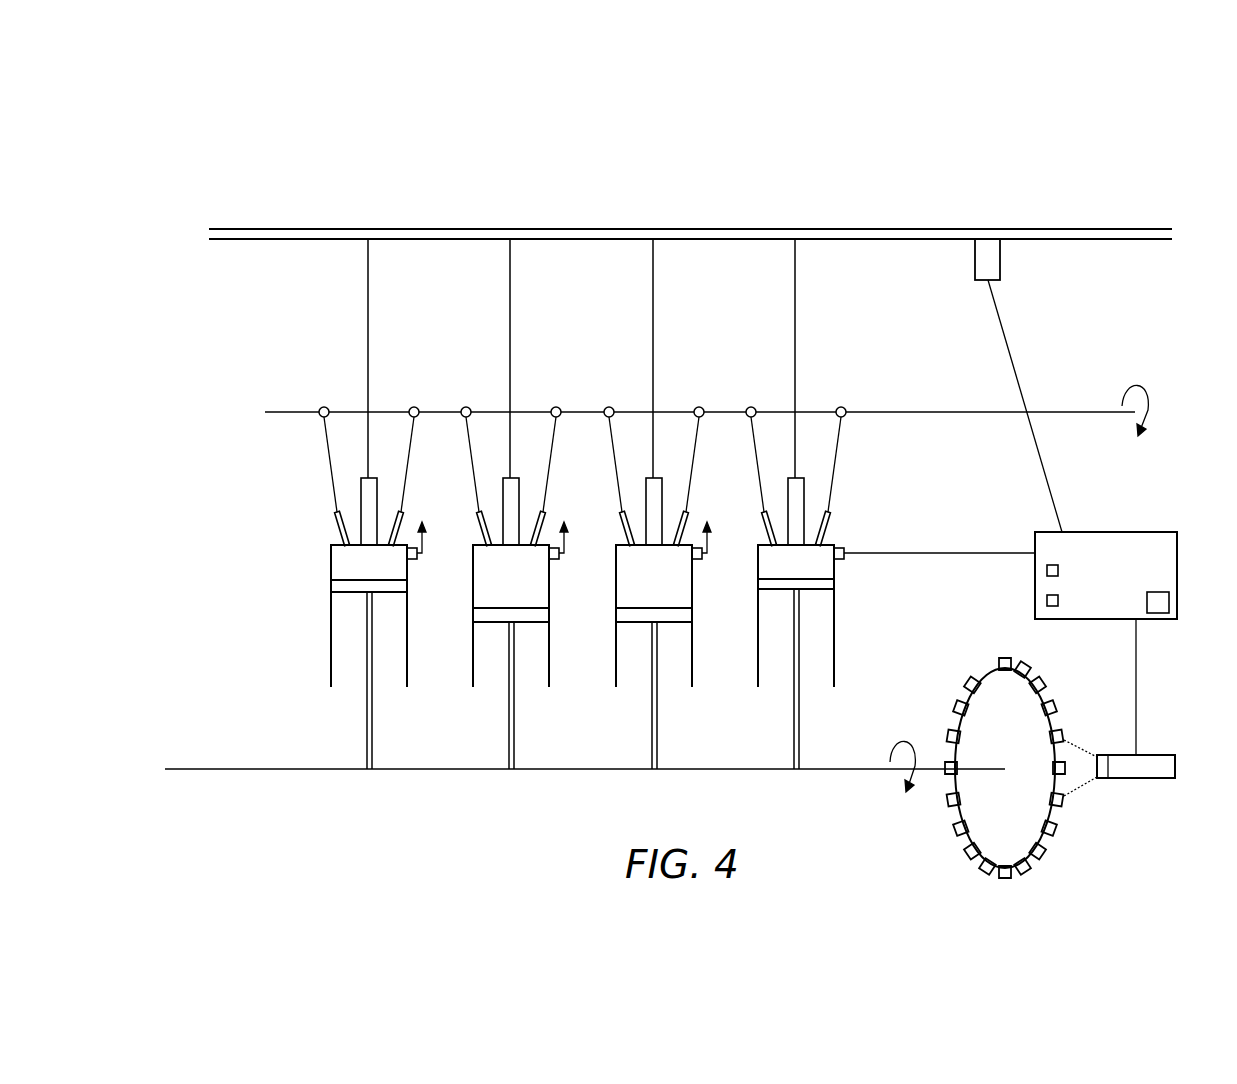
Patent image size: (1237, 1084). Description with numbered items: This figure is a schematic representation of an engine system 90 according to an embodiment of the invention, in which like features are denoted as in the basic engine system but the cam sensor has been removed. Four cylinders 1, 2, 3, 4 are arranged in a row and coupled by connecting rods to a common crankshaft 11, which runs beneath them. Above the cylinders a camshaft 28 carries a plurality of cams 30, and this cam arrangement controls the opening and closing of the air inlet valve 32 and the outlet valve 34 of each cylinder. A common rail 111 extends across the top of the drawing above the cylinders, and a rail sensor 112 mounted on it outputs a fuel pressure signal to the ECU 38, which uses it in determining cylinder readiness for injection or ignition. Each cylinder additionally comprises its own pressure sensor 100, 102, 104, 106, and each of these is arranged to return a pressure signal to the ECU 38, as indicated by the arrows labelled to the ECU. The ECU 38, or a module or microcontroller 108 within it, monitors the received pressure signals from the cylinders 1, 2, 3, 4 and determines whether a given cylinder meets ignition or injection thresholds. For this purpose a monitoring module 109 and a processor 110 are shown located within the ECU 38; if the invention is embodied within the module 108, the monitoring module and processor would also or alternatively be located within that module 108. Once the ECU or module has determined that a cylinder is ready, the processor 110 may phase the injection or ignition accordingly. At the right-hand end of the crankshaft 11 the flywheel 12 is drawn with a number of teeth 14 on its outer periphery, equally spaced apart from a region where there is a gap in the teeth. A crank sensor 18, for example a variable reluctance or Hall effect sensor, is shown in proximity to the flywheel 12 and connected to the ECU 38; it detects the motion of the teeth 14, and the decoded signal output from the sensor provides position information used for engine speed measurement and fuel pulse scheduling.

The engine system 90 is at (194, 212).
The common rail 111 is at (912, 228).
The rail sensor 112 is at (975, 263).
The camshaft 28 is at (913, 412).
The cams 30 is at (556, 406).
The air inlet valve 32 is at (336, 519).
The outlet valve 34 is at (408, 514).
The cylinder 1 is at (367, 504).
The cylinder 2 is at (481, 569).
The cylinder 3 is at (625, 569).
The cylinder 4 is at (766, 569).
The pressure sensor 100 is at (416, 562).
The pressure sensor 102 is at (558, 562).
The pressure sensor 104 is at (700, 562).
The pressure sensor 106 is at (847, 562).
The ECU 38 is at (1178, 540).
The module or microcontroller 108 is at (1170, 601).
The monitoring module 109 is at (1047, 571).
The processor 110 is at (1047, 601).
The crankshaft 11 is at (245, 768).
The flywheel 12 is at (981, 832).
The teeth 14 is at (1042, 856).
The crank sensor 18 is at (1176, 766).